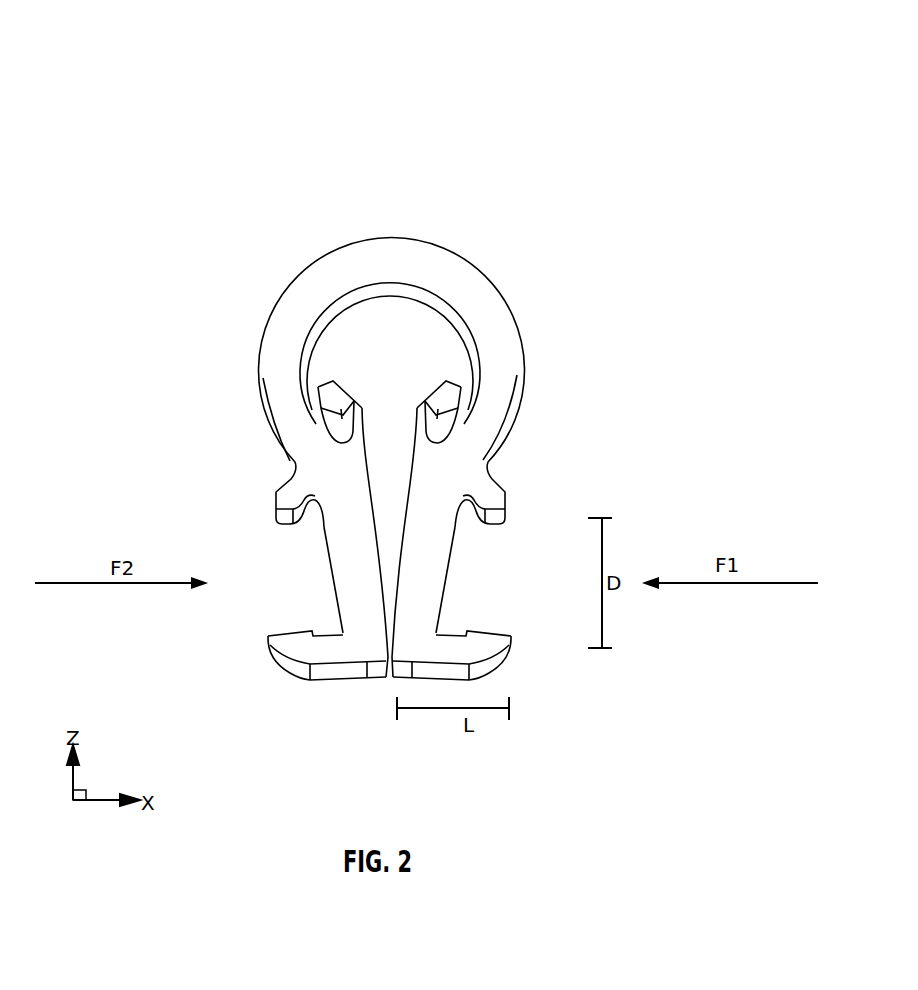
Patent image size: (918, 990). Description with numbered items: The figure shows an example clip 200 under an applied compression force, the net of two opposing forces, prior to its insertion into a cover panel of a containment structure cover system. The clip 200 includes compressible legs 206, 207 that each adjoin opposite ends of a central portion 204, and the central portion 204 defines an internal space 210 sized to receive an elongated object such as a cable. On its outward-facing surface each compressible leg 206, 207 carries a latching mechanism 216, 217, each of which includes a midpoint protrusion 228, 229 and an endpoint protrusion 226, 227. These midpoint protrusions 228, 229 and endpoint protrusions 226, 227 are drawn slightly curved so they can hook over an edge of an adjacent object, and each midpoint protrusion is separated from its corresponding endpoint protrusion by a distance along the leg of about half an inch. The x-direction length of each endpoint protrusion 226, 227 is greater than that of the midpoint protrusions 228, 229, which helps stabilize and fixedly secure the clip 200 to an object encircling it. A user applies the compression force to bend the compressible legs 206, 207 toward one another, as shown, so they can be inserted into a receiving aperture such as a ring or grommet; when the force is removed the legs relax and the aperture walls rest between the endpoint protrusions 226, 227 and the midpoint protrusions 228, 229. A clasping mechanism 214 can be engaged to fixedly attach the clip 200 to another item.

The clip 200 is at (118, 62).
The central portion 204 is at (312, 290).
The internal space 210 is at (337, 367).
The clasping mechanism 214 is at (425, 390).
The compressible leg 206 is at (357, 577).
The compressible leg 207 is at (425, 577).
The midpoint protrusion 229 is at (290, 490).
The midpoint protrusion 228 is at (490, 492).
The endpoint protrusion 227 is at (310, 647).
The endpoint protrusion 226 is at (478, 638).
The latching mechanism 217 is at (280, 582).
The latching mechanism 216 is at (478, 596).